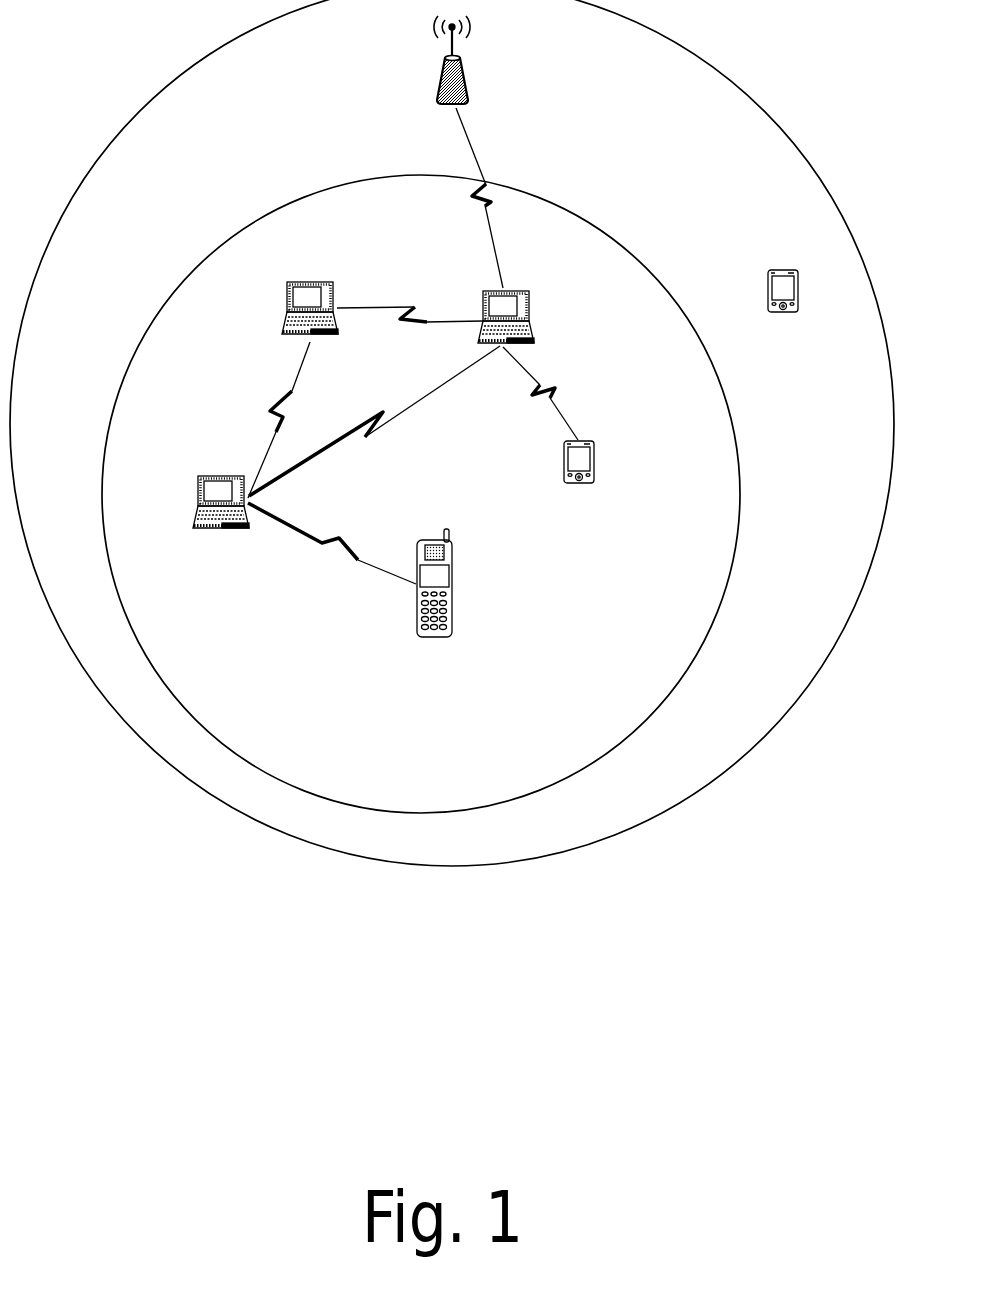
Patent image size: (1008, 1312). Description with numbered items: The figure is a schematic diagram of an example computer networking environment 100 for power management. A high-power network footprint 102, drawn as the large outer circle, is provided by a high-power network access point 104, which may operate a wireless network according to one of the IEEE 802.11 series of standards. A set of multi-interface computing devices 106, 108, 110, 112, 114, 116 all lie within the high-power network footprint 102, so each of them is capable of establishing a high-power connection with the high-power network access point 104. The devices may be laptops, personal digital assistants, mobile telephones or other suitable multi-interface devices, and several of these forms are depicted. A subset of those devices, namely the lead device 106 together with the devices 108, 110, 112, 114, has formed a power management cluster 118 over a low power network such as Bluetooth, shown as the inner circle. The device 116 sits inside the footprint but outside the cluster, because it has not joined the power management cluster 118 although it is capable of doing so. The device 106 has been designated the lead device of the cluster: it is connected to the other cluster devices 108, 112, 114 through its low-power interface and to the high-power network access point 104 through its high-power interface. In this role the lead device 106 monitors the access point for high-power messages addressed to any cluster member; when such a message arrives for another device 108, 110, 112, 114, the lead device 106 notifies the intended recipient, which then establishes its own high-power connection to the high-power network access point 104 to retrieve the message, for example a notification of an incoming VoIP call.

The computer networking environment 100 is at (208, 977).
The high-power network footprint 102 is at (152, 234).
The high-power network access point 104 is at (437, 83).
The lead device 106 is at (520, 290).
The device 108 is at (597, 463).
The device 110 is at (453, 597).
The device 112 is at (213, 476).
The device 114 is at (300, 282).
The device 116 is at (780, 263).
The power management cluster 118 is at (502, 772).